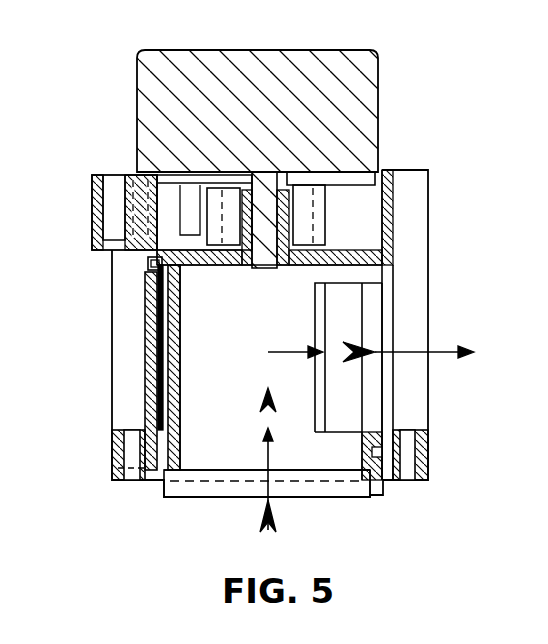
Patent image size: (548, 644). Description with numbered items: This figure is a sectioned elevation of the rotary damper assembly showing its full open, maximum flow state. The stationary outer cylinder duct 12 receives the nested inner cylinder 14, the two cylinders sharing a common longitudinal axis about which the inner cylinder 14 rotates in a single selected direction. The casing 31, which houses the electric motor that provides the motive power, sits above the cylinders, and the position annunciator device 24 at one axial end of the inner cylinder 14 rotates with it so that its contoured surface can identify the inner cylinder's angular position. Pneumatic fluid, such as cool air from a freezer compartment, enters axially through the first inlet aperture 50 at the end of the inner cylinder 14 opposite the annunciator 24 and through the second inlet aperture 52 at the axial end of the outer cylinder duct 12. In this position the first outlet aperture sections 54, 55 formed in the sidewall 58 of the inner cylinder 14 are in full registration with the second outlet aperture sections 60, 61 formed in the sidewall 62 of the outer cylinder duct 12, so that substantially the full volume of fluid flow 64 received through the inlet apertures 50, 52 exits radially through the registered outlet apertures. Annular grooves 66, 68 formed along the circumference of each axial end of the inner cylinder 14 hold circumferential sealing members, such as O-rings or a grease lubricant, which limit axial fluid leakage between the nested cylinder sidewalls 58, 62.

The casing 31 is at (273, 50).
The position annunciator device 24 is at (328, 178).
The inner cylinder 14 is at (197, 243).
The outer cylinder duct 12 is at (430, 210).
The first outlet aperture section 54 is at (422, 360).
The first outlet aperture section 55 is at (373, 302).
The fluid flow 64 is at (413, 347).
The second outlet aperture section 60 is at (454, 381).
The second outlet aperture section 61 is at (387, 393).
The annular groove 66 is at (157, 268).
The sidewall of the inner cylinder 58 is at (167, 333).
The sidewall of the outer cylinder 62 is at (147, 377).
The annular groove 68 is at (118, 458).
The first inlet aperture 50 is at (232, 478).
The second inlet aperture 52 is at (347, 492).